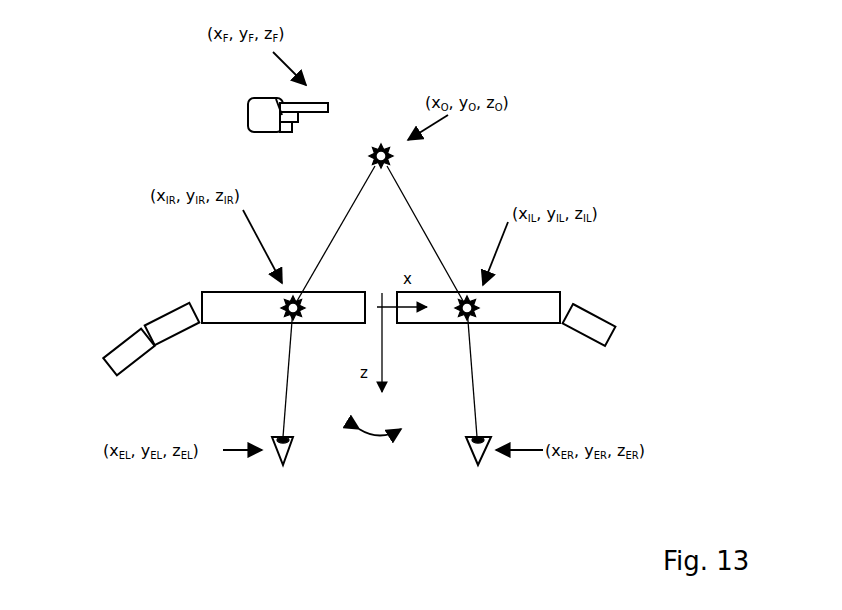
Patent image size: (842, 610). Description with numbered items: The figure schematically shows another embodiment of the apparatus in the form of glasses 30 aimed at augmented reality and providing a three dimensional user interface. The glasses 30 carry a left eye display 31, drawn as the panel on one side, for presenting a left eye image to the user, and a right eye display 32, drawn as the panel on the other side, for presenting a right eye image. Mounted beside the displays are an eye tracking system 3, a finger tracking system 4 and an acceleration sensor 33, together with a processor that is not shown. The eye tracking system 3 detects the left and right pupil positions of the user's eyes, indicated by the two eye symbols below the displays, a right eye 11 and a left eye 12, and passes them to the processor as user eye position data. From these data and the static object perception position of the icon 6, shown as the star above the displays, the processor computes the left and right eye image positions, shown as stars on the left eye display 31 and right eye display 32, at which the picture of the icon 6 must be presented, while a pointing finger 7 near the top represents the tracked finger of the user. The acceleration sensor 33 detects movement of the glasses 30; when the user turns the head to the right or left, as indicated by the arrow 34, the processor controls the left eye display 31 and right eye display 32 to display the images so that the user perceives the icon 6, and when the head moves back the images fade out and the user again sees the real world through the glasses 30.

The glasses 30 is at (81, 156).
The finger / pointing object 7 is at (318, 102).
The icon 6 is at (392, 159).
The left eye display 31 is at (213, 292).
The right eye display 32 is at (558, 291).
The finger tracking system 4 is at (168, 312).
The acceleration sensor 33 is at (123, 338).
The eye tracking system 3 is at (618, 330).
The left eye 12 is at (288, 455).
The right eye 11 is at (470, 450).
The arrow 34 is at (380, 437).